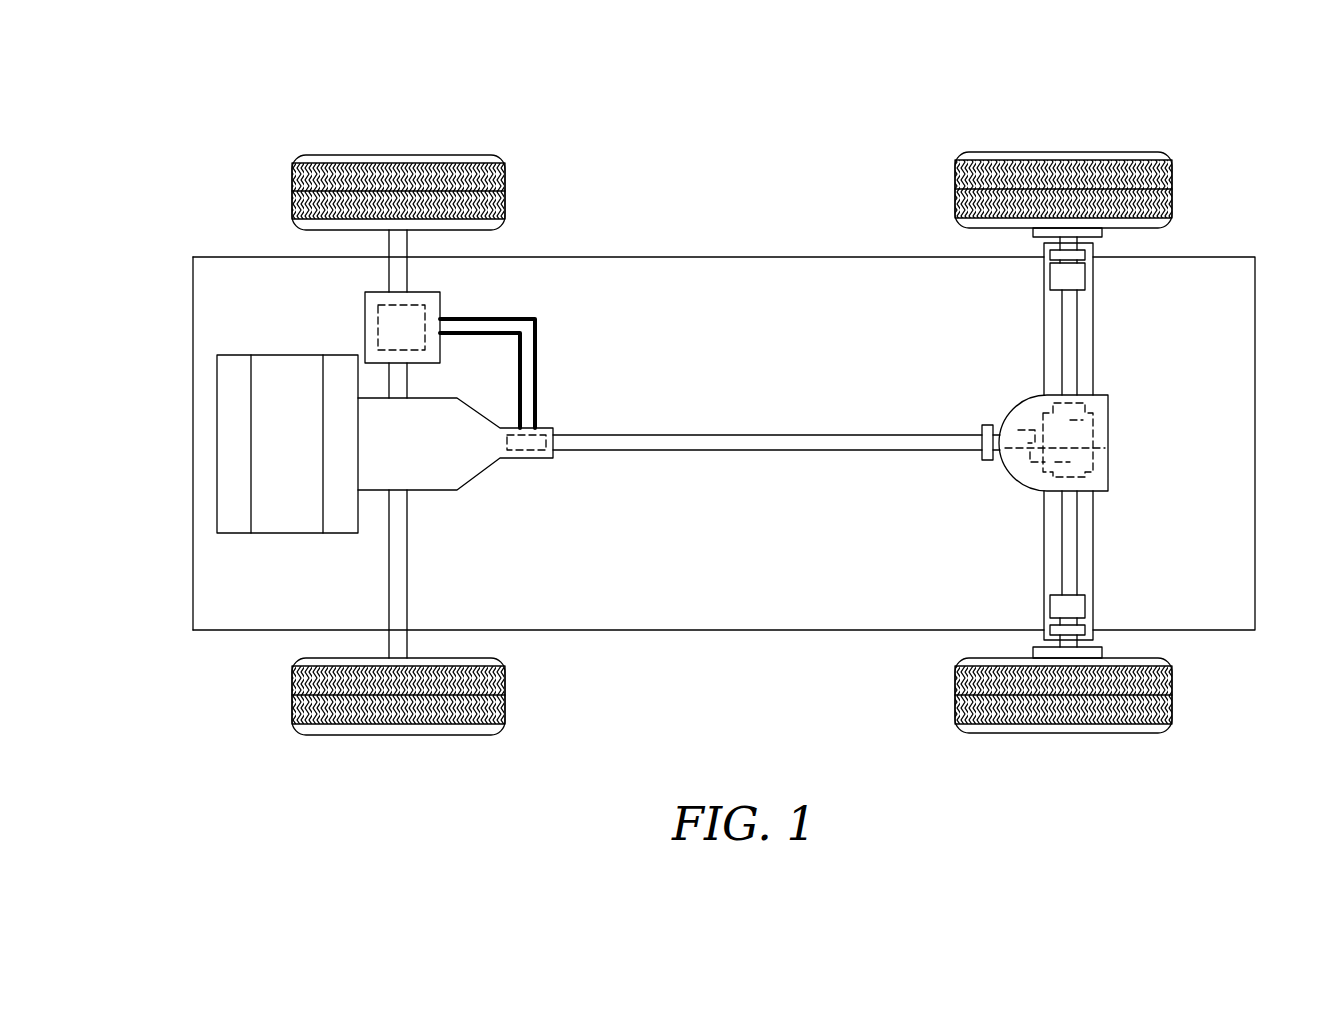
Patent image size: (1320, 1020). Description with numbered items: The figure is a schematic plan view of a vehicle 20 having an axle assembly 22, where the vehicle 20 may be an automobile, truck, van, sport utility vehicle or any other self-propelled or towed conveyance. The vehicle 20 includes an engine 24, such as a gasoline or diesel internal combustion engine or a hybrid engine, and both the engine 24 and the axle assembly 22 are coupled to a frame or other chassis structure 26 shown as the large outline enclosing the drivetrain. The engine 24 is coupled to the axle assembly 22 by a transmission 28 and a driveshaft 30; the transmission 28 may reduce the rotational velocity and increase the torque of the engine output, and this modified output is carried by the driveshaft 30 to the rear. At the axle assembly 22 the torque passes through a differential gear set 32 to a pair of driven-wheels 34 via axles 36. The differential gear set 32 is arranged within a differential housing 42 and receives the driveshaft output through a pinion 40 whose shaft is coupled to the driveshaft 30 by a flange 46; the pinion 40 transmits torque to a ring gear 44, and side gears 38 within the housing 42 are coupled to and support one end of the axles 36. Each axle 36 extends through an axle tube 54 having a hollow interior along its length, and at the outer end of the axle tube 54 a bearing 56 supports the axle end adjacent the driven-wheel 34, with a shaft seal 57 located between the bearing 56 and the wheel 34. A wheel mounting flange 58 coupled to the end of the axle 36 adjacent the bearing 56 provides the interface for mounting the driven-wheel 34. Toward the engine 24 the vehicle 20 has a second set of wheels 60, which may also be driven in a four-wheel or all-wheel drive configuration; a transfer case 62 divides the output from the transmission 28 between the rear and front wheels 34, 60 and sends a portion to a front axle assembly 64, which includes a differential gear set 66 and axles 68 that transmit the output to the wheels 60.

The vehicle 20 is at (822, 80).
The axle assembly 22 is at (1122, 463).
The engine 24 is at (217, 468).
The chassis structure 26 is at (730, 257).
The transmission 28 is at (478, 476).
The driveshaft 30 is at (866, 435).
The differential gear set 32 is at (1108, 435).
The driven-wheels 34 is at (1058, 152).
The axles 36 is at (1077, 318).
The side gears 38 is at (1085, 405).
The pinion 40 is at (1023, 430).
The differential housing 42 is at (998, 466).
The ring gear 44 is at (1105, 450).
The flange 46 is at (982, 428).
The axle tube 54 is at (1044, 330).
The bearing 56 is at (1050, 275).
The shaft seal 57 is at (1050, 255).
The wheel mounting flange 58 is at (1102, 232).
The second set of wheels 60 is at (395, 155).
The transfer case 62 is at (533, 455).
The front axle assembly 64 is at (362, 335).
The differential gear set 66 is at (430, 318).
The axles 68 is at (389, 278).